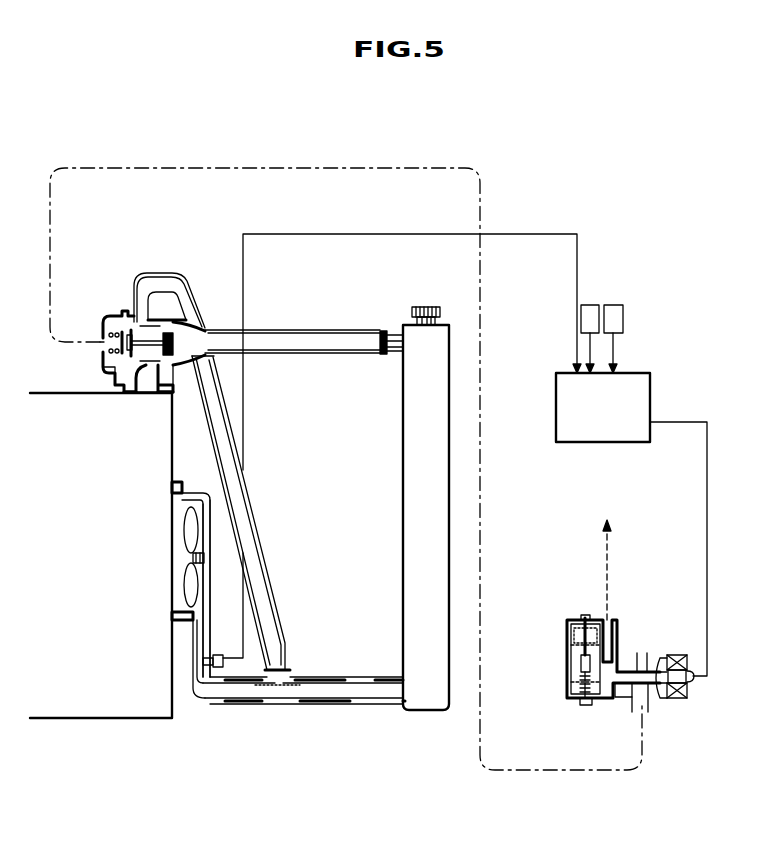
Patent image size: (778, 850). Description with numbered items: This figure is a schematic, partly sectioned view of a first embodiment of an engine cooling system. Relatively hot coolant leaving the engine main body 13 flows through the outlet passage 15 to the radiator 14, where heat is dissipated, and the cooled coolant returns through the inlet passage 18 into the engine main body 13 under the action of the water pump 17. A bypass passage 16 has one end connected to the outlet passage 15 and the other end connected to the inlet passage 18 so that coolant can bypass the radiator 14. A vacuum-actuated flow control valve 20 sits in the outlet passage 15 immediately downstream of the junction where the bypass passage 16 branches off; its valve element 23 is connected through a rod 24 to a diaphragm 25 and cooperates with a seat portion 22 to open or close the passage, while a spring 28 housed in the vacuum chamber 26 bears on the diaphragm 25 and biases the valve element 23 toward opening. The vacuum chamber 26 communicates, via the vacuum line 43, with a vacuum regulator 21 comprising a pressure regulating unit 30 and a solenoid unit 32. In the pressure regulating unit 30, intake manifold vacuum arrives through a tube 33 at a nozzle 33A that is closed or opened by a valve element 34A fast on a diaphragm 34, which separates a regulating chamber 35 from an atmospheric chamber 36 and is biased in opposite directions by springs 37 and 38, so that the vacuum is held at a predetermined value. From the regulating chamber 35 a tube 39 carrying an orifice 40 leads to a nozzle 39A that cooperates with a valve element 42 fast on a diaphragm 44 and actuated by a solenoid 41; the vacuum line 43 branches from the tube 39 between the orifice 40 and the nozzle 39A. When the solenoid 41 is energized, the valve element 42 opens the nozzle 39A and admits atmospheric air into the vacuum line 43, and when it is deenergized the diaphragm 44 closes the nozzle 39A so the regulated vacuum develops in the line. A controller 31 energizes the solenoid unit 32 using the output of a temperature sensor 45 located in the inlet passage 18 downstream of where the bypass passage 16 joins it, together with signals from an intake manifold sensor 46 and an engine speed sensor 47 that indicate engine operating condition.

The engine main body 13 is at (131, 719).
The radiator 14 is at (450, 428).
The outlet passage 15 is at (206, 340).
The bypass passage 16 is at (279, 598).
The water pump 17 is at (185, 582).
The inlet passage 18 is at (265, 692).
The flow control valve 20 is at (116, 320).
The vacuum regulator 21 is at (648, 655).
The seat portion 22 is at (205, 362).
The valve element 23 is at (176, 335).
The rod 24 is at (153, 335).
The diaphragm 25 is at (143, 380).
The vacuum chamber 26 is at (110, 360).
The spring 28 is at (103, 330).
The pressure regulating unit 30 is at (577, 620).
The controller 31 is at (598, 445).
The solenoid unit 32 is at (680, 699).
The tube 33 is at (608, 611).
The nozzle 33A is at (584, 640).
The diaphragm 34 is at (595, 704).
The valve element 34A is at (585, 664).
The regulating chamber 35 is at (610, 699).
The atmospheric chamber 36 is at (582, 699).
The spring 37 is at (580, 682).
The spring 38 is at (583, 658).
The tube 39 is at (652, 644).
The nozzle 39A is at (656, 655).
The orifice 40 is at (622, 652).
The solenoid 41 is at (688, 690).
The valve element 42 is at (665, 660).
The vacuum line 43 is at (520, 771).
The diaphragm 44 is at (652, 698).
The temperature sensor 45 is at (222, 654).
The intake manifold sensor 46 is at (590, 305).
The engine speed sensor 47 is at (618, 305).